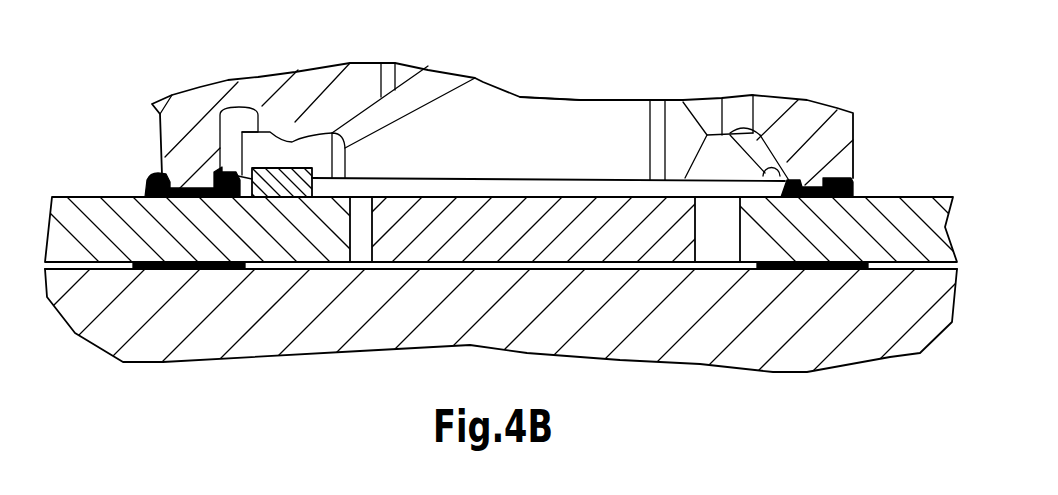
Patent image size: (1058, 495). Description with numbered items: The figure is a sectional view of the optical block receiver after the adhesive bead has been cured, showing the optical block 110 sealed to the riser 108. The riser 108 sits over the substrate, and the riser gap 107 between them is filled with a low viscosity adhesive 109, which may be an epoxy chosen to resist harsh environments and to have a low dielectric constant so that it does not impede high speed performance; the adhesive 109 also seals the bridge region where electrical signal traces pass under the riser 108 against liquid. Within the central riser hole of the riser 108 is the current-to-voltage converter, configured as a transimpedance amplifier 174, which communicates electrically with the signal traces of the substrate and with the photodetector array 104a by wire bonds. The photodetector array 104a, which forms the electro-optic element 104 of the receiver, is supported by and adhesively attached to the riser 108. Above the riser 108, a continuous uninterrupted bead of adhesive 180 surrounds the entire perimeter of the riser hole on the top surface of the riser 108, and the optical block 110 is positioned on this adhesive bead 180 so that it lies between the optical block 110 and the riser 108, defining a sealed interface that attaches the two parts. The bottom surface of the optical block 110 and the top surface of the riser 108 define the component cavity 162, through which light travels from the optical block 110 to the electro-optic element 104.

The electro-optic element 104 is at (302, 160).
The photodetector array 104a is at (278, 168).
The riser gap 107 is at (300, 285).
The riser 108 is at (912, 193).
The low viscosity adhesive 109 is at (203, 269).
The optical block 110 is at (807, 100).
The component cavity 162 is at (522, 140).
The transimpedance amplifier 174 is at (598, 269).
The adhesive bead 180 is at (150, 182).